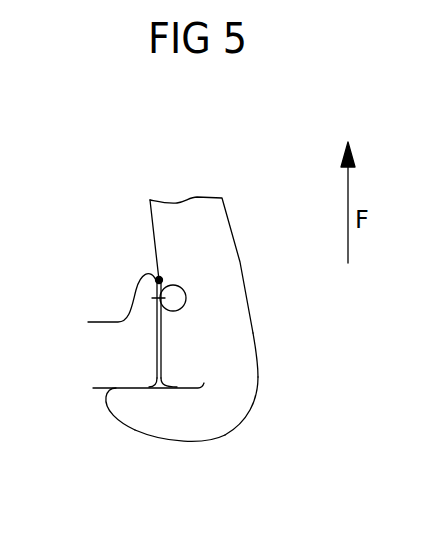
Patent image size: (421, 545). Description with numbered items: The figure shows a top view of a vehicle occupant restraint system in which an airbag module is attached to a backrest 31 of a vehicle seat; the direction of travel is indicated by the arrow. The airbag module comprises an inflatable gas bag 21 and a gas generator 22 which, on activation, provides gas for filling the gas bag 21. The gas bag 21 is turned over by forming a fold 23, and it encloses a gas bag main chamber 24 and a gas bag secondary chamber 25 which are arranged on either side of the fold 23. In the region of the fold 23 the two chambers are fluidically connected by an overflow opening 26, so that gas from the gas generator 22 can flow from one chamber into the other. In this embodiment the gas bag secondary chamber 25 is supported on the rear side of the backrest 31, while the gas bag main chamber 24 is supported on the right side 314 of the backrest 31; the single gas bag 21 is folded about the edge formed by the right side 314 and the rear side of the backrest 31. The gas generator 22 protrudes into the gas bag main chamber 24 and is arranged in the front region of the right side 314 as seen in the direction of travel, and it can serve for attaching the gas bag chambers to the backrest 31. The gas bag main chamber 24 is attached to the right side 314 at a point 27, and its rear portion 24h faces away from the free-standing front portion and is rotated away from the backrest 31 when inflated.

The inflatable gas bag 21 is at (257, 395).
The gas generator 22 is at (177, 297).
The fold 23 is at (195, 388).
The gas bag main chamber 24 is at (220, 233).
The rear portion of the gas bag main chamber 24h is at (227, 333).
The gas bag secondary chamber 25 is at (162, 422).
The overflow opening 26 is at (218, 393).
The point of attachment 27 is at (159, 279).
The backrest 31 is at (113, 340).
The right side of the backrest 314 is at (157, 350).